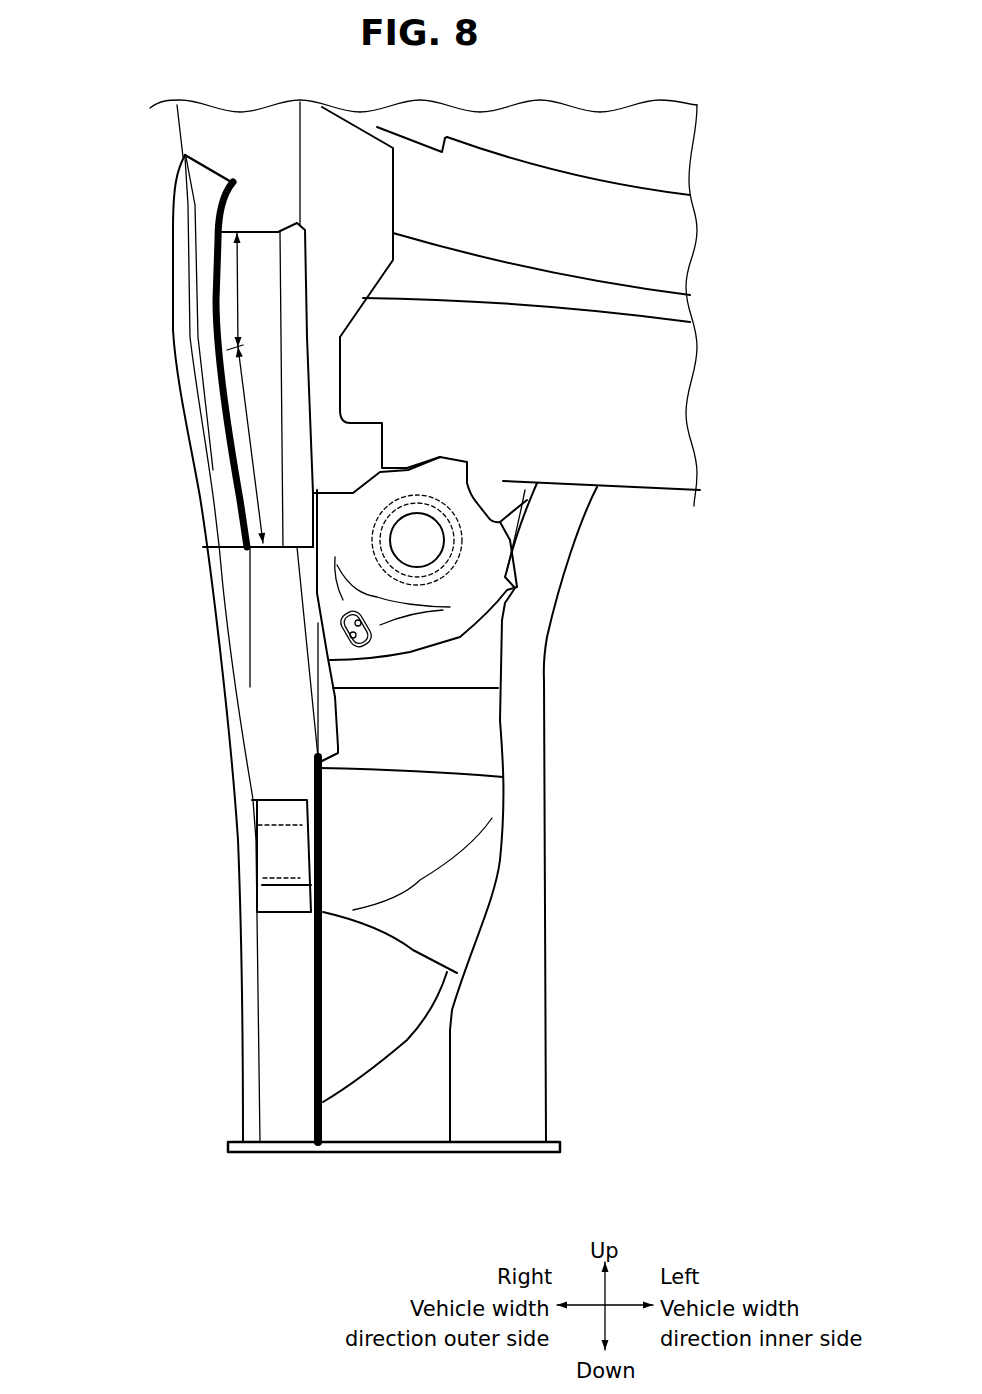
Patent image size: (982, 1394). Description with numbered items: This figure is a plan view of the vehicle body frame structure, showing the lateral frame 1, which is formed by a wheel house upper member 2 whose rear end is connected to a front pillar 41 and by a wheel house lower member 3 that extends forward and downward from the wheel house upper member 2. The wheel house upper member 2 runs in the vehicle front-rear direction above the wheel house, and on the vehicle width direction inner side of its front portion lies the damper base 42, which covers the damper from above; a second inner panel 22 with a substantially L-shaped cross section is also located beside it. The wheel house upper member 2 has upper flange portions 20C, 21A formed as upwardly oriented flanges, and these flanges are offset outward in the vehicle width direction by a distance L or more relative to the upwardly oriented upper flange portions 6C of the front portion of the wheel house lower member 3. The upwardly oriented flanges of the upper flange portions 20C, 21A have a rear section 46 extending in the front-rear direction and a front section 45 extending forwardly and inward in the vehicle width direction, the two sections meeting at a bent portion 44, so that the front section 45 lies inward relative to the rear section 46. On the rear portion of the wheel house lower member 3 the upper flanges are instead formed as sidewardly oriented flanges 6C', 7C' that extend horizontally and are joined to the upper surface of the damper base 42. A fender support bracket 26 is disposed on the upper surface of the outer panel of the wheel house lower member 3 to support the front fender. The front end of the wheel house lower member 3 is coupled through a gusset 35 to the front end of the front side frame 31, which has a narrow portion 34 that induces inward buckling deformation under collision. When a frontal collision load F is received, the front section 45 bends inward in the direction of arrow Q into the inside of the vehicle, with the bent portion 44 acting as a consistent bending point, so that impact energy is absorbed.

The lateral frame 1 is at (185, 627).
The wheel house upper member 2 is at (125, 370).
The wheel house lower member 3 is at (217, 798).
The upper flange portion 20C is at (131, 364).
The upper flange portion 21A is at (166, 364).
The second inner panel 22 is at (358, 442).
The fender support bracket 26 is at (280, 850).
The front side frame 31 is at (551, 956).
The narrow portion 34 is at (490, 805).
The gusset 35 is at (385, 1120).
The front pillar 41 is at (143, 252).
The damper base 42 is at (482, 593).
The bent portion 44 is at (228, 323).
The front section 45 is at (258, 445).
The rear section 46 is at (250, 291).
The upper flange portion 6C is at (206, 949).
The sidewardly oriented flange 6C' is at (485, 653).
The sidewardly oriented flange 7C' is at (397, 653).
The bending direction arrow Q is at (270, 525).
The offset distance L is at (317, 653).
The frontal collision load F is at (287, 1155).